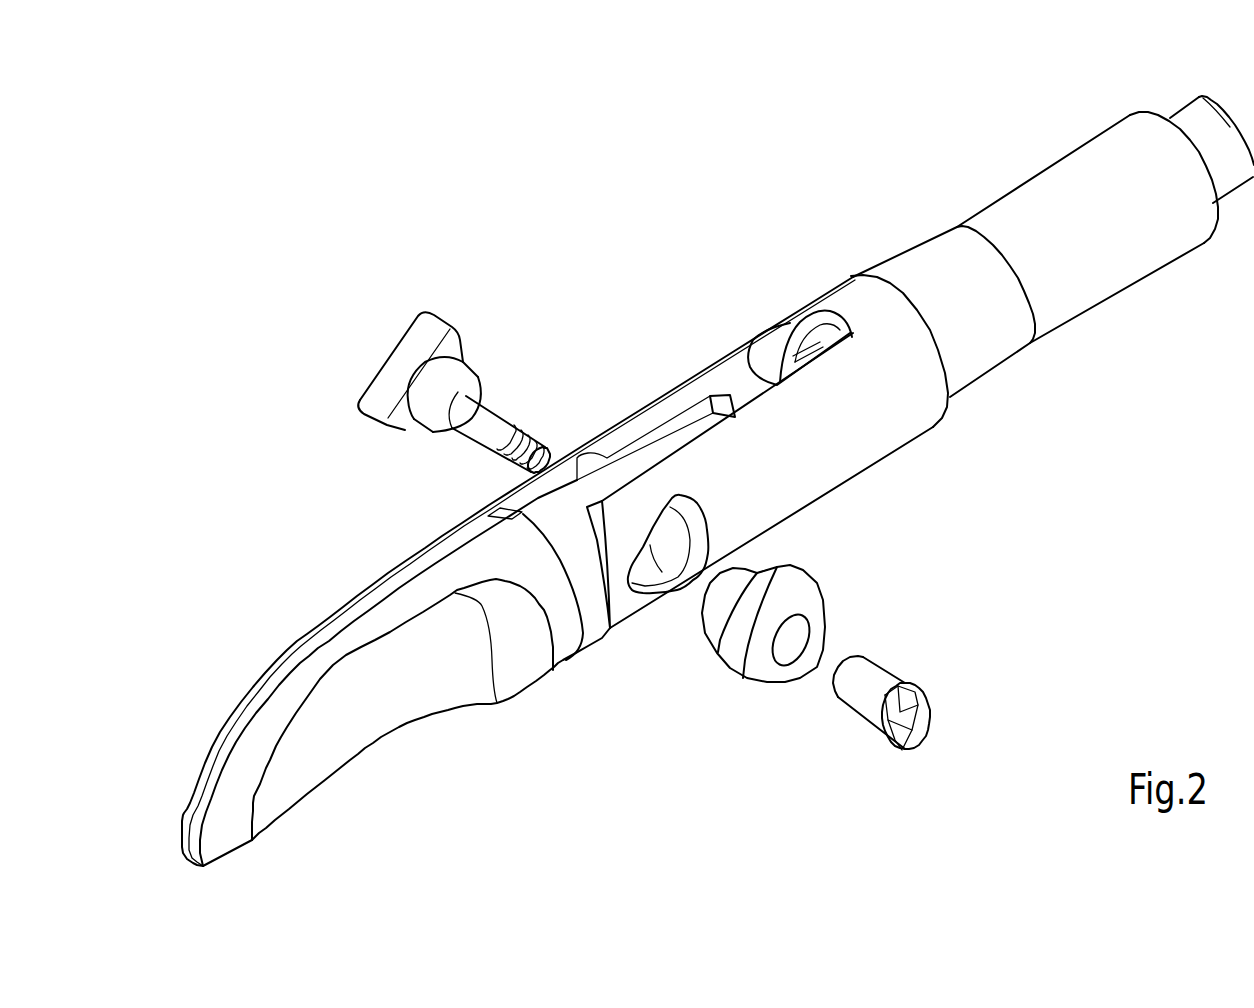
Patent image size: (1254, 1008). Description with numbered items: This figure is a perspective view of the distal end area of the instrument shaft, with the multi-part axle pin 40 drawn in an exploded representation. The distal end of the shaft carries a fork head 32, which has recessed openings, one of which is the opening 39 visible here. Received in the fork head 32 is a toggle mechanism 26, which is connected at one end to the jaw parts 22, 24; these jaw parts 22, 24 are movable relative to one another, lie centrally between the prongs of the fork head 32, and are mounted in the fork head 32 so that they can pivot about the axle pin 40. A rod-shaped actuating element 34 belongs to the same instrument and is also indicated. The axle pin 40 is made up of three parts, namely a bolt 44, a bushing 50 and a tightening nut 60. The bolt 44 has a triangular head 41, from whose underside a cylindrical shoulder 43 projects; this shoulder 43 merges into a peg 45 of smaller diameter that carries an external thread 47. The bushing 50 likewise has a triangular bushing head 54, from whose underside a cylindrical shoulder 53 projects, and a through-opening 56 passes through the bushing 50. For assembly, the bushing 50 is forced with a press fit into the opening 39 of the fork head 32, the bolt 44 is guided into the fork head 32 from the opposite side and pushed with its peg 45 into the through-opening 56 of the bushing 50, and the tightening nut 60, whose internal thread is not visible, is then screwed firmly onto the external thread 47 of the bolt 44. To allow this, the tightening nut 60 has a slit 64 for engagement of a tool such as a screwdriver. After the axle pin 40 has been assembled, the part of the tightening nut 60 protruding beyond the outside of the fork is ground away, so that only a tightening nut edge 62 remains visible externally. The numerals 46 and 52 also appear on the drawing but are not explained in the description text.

The jaw part 22 is at (405, 683).
The jaw part 24 is at (327, 623).
The toggle mechanism 26 is at (698, 423).
The fork head 32 is at (877, 416).
The rod-shaped actuating element 34 is at (1183, 120).
The opening 39 is at (653, 613).
The axle pin 40 is at (498, 290).
The triangular head 41 is at (410, 348).
The cylindrical shoulder 43 is at (420, 412).
The bolt 44 is at (497, 423).
The peg 45 is at (487, 427).
The slot 46 is at (523, 474).
The external thread 47 is at (532, 433).
The bushing 50 is at (760, 667).
The block body 52 is at (814, 593).
The cylindrical shoulder 53 is at (718, 630).
The triangular bushing head 54 is at (783, 587).
The through-opening 56 is at (793, 637).
The tightening nut 60 is at (875, 685).
The tightening nut edge 62 is at (898, 750).
The slit 64 is at (920, 704).